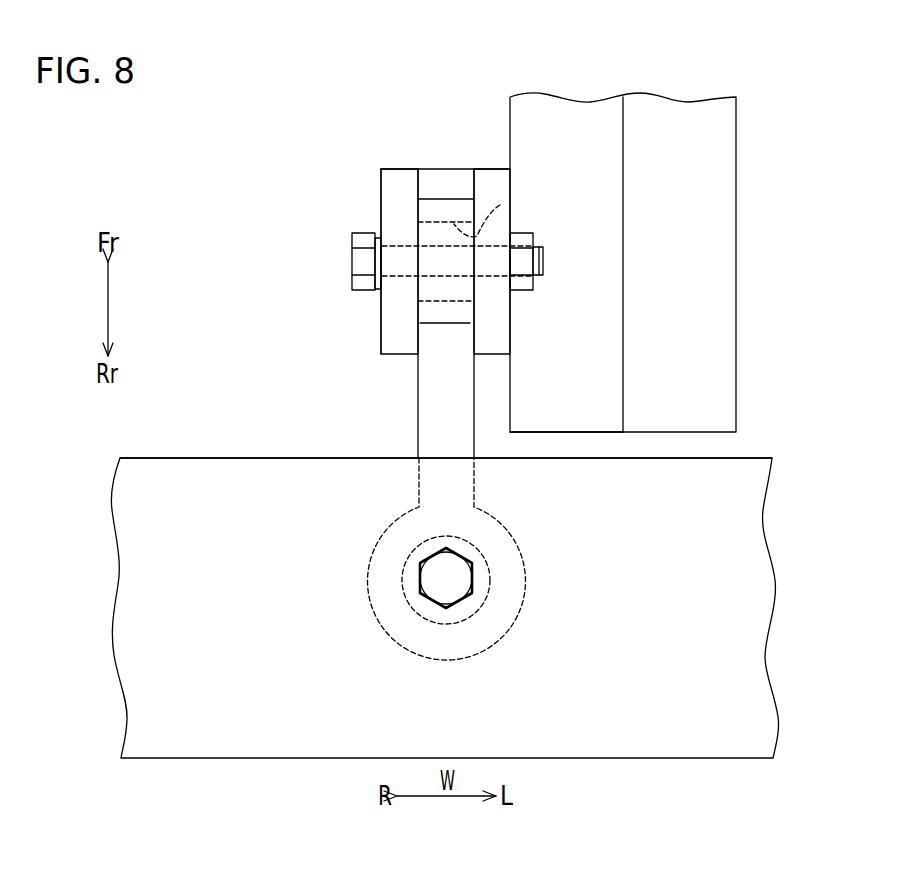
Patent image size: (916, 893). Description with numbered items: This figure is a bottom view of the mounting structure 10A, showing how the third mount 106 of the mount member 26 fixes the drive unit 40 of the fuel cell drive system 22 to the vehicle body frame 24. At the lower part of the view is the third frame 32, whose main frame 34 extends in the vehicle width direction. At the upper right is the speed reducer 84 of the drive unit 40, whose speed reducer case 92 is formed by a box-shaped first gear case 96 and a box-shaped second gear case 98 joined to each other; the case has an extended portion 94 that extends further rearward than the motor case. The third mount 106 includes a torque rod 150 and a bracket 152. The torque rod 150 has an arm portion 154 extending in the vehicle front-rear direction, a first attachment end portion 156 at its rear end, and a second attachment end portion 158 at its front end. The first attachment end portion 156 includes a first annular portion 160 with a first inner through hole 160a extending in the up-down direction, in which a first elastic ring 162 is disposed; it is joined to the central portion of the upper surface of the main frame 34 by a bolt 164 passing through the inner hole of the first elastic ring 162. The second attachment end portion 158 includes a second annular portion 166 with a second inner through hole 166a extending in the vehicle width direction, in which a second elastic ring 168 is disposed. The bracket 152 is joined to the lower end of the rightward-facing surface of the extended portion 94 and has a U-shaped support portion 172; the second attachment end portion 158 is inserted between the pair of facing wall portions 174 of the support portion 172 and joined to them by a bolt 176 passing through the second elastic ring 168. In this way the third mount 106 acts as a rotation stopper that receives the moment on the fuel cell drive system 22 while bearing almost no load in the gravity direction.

The mounting structure 10A is at (583, 77).
The fuel cell drive system 22 is at (655, 75).
The speed reducer 84 is at (737, 110).
The drive unit 40 is at (648, 262).
The extended portion 94 is at (737, 165).
The speed reducer case 92 is at (806, 217).
The second gear case 98 is at (715, 242).
The first gear case 96 is at (612, 298).
The third mount 106 is at (377, 142).
The mount member 26 is at (415, 398).
The torque rod 150 is at (418, 389).
The bracket 152 is at (401, 168).
The arm portion 154 is at (433, 423).
The wall portions 174 is at (383, 326).
The support portion 172 is at (381, 169).
The second attachment end portion 158 is at (283, 158).
The second annular portion 166 is at (440, 205).
The second inner through hole 166a is at (500, 205).
The second elastic ring 168 is at (428, 222).
The bolt 176 is at (365, 262).
The first attachment end portion 156 is at (283, 545).
The first annular portion 160 is at (368, 584).
The first inner through hole 160a is at (445, 623).
The first elastic ring 162 is at (403, 567).
The bolt 164 is at (452, 578).
The third frame 32 is at (778, 623).
The vehicle body frame 24 is at (444, 578).
The main frame 34 is at (208, 473).